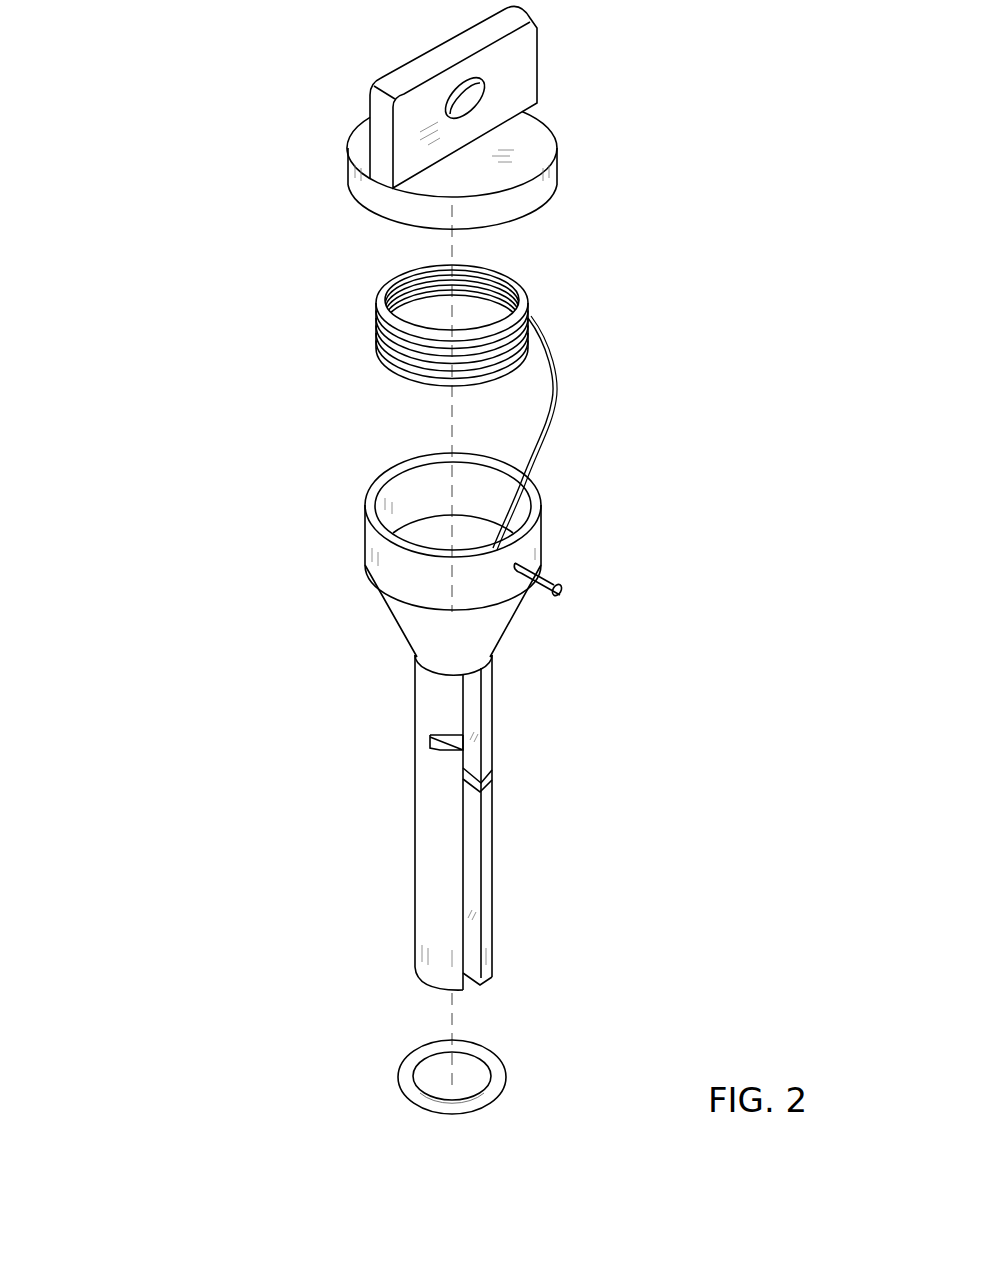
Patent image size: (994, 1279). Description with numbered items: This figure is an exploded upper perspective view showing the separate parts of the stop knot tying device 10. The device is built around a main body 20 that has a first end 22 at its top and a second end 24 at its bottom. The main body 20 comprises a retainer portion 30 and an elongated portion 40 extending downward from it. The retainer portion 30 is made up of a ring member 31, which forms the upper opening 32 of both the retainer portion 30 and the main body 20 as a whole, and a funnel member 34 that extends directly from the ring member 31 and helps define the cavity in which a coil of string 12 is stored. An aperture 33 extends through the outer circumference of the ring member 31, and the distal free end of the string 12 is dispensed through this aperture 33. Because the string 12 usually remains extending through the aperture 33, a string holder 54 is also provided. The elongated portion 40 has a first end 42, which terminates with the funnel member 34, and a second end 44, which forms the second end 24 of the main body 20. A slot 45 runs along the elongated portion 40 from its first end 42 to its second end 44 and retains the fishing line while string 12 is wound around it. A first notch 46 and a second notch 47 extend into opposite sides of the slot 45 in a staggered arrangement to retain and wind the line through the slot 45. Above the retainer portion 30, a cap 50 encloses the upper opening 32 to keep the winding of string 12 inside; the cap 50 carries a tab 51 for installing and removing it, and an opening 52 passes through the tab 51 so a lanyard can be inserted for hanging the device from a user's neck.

The stop knot tying device 10 is at (150, 122).
The coil of string 12 is at (528, 298).
The main body 20 is at (400, 825).
The first end 22 is at (365, 525).
The second end 24 is at (433, 986).
The retainer portion 30 is at (560, 524).
The ring member 31 is at (405, 567).
The upper opening 32 is at (425, 492).
The aperture 33 is at (538, 570).
The funnel member 34 is at (407, 620).
The elongated portion 40 is at (492, 847).
The first end 42 is at (427, 680).
The second end 44 is at (485, 978).
The slot 45 is at (472, 885).
The first notch 46 is at (438, 743).
The second notch 47 is at (485, 783).
The cap 50 is at (522, 192).
The tab 51 is at (507, 75).
The opening 52 is at (475, 95).
The string holder 54 is at (500, 1068).